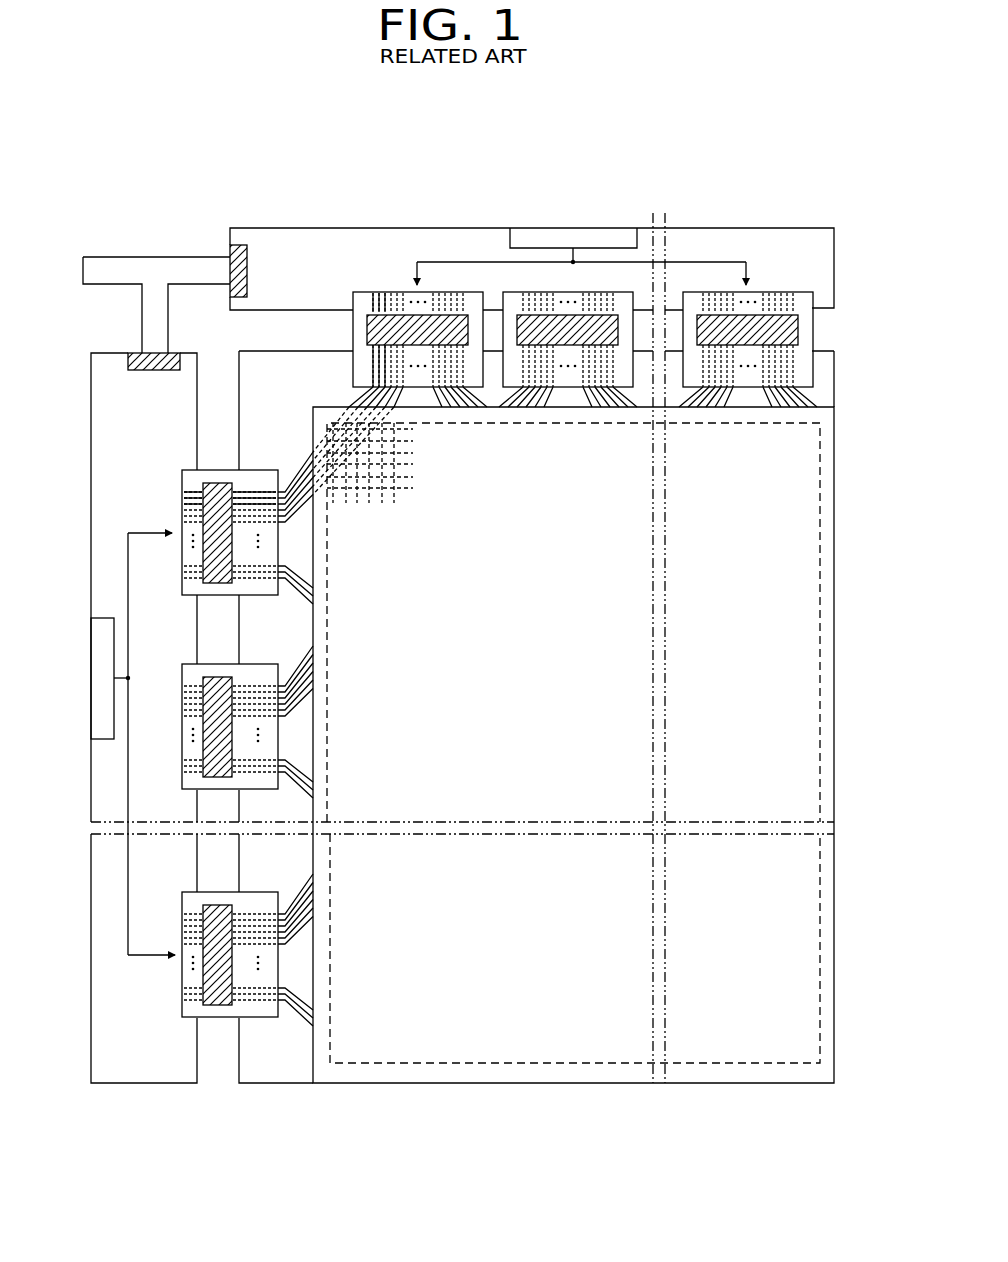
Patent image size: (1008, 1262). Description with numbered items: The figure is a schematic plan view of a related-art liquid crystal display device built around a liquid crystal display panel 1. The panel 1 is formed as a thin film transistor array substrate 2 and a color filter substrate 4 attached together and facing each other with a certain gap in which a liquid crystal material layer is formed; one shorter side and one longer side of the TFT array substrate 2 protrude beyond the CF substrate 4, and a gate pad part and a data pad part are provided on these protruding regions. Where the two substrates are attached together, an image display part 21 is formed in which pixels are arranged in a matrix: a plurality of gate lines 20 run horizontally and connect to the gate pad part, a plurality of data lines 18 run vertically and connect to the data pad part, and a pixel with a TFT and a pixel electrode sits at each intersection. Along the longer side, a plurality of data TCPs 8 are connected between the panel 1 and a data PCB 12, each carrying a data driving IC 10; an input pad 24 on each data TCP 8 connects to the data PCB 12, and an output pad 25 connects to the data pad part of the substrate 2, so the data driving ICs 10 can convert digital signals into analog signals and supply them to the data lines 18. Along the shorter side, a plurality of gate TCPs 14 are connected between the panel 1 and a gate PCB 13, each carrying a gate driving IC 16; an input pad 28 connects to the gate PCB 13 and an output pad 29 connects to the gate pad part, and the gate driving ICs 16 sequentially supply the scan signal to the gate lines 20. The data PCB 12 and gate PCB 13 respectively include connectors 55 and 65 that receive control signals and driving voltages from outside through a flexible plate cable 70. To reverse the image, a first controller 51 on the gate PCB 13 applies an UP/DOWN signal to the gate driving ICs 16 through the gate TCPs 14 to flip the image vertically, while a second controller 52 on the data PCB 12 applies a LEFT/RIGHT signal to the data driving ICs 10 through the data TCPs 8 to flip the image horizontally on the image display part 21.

The liquid crystal display panel 1 is at (843, 627).
The thin film transistor array substrate 2 is at (828, 390).
The color filter substrate 4 is at (830, 440).
The data TCP 8 is at (805, 357).
The data driving IC 10 is at (797, 325).
The data PCB 12 is at (823, 261).
The gate PCB 13 is at (95, 409).
The gate TCP 14 is at (183, 521).
The gate driving IC 16 is at (208, 506).
The data line 18 is at (370, 490).
The gate line 20 is at (402, 463).
The image display part 21 is at (499, 704).
The input pad 24 is at (373, 303).
The output pad 25 is at (373, 362).
The input pad 28 is at (183, 493).
The output pad 29 is at (248, 489).
The first controller 51 is at (95, 677).
The second controller 52 is at (575, 238).
The connector 55 is at (238, 246).
The connector 65 is at (128, 361).
The flexible plate cable 70 is at (161, 262).